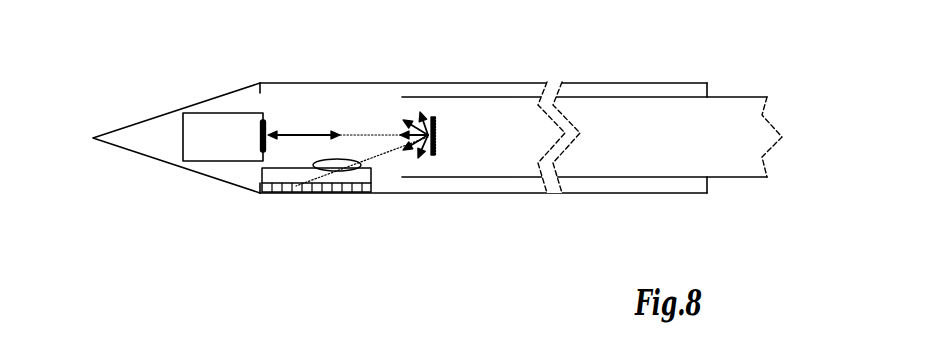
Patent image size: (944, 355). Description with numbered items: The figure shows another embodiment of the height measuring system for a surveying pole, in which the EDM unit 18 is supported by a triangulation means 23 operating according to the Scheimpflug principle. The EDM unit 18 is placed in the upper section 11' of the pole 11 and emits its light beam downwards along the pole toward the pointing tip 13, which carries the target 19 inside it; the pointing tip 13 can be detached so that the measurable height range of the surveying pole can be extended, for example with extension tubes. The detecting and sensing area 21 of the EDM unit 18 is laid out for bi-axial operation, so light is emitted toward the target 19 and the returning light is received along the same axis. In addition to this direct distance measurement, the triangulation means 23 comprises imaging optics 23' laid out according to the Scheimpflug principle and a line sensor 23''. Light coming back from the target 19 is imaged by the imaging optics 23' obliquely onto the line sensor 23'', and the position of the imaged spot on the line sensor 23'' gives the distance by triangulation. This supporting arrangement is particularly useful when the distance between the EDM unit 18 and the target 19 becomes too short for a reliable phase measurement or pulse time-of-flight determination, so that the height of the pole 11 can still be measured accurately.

The pole 11 is at (584, 108).
The upper section of the pole 11' is at (757, 118).
The pointing tip 13 is at (123, 143).
The EDM unit 18 is at (195, 133).
The target 19 is at (436, 136).
The detecting and sensing area 21 is at (258, 146).
The triangulation means 23 is at (318, 222).
The imaging optics laid out according to the Scheimpflug principle 23' is at (346, 105).
The line sensor 23'' is at (301, 229).